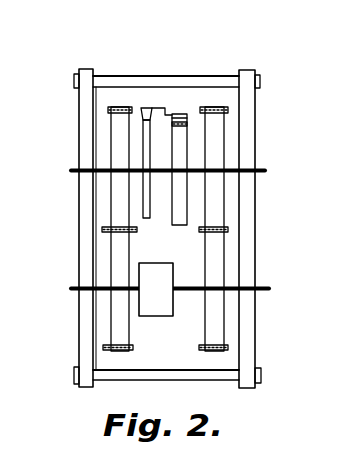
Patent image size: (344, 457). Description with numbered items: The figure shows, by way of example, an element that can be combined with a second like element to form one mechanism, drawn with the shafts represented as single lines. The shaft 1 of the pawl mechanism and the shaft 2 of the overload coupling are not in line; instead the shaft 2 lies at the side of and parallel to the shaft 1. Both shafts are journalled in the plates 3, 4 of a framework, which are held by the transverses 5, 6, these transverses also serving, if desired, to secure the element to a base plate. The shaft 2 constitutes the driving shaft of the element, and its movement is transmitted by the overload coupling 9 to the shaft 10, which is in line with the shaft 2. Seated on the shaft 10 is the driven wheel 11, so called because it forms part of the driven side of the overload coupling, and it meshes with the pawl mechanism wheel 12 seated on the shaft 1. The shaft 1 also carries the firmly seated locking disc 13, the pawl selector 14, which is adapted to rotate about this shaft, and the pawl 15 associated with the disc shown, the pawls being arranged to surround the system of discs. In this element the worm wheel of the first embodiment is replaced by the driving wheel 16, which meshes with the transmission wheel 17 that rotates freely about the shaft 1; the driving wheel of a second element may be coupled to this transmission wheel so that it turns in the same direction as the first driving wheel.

The shaft of the pawl mechanism 1 is at (105, 168).
The shaft of the overload coupling 2 is at (185, 291).
The plate 3 is at (80, 117).
The plate 4 is at (245, 70).
The transverse 5 is at (100, 76).
The transverse 6 is at (215, 380).
The overload coupling 9 is at (158, 316).
The shaft 10 is at (103, 291).
The driven wheel 11 is at (119, 350).
The pawl mechanism wheel 12 is at (117, 107).
The locking disc 13 is at (136, 128).
The pawl selector 14 is at (179, 113).
The pawl 15 is at (153, 110).
The driving wheel 16 is at (219, 352).
The transmission wheel 17 is at (212, 107).